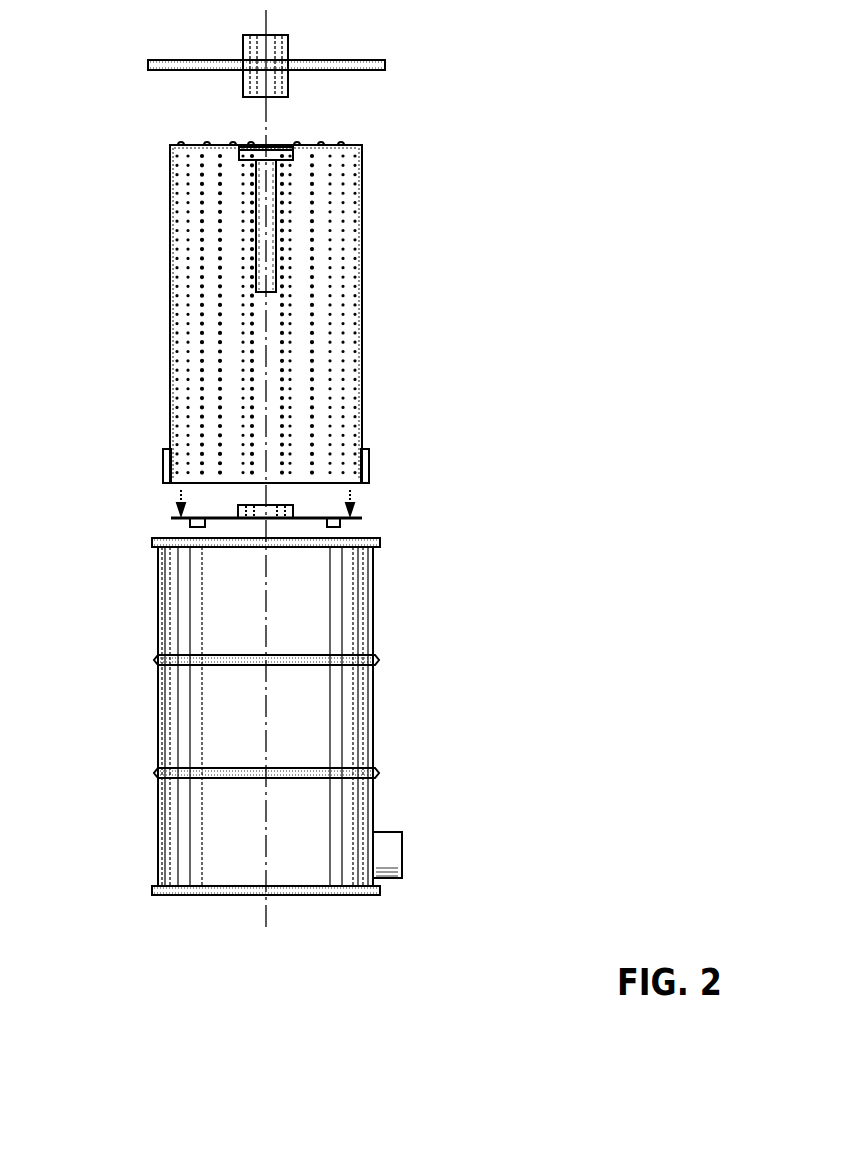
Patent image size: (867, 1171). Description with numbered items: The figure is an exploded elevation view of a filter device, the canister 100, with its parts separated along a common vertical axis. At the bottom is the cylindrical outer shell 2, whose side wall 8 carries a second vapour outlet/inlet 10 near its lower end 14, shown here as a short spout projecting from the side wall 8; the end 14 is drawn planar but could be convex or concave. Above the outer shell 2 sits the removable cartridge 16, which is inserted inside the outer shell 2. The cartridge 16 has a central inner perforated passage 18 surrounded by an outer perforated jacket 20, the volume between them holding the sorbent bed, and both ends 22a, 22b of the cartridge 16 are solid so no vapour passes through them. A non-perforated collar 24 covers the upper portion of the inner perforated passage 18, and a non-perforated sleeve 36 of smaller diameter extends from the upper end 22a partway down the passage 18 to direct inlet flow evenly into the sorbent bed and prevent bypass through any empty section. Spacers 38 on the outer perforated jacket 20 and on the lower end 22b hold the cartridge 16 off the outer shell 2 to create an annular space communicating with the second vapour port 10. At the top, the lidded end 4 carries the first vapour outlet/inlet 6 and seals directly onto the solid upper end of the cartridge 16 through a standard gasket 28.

The outer shell 2 is at (281, 696).
The lidded end 4 is at (385, 63).
The first vapour outlet/inlet 6 is at (243, 50).
The side wall 8 is at (373, 613).
The second vapour outlet/inlet 10 is at (387, 832).
The end of outer shell 14 is at (172, 893).
The removable cartridge 16 is at (260, 307).
The inner perforated passage 18 is at (292, 192).
The outer perforated jacket 20 is at (362, 210).
The end of cartridge 22a is at (343, 146).
The end of cartridge 22b is at (170, 518).
The non-perforated collar 24 is at (240, 152).
The gasket 28 is at (280, 145).
The non-perforated sleeve 36 is at (256, 272).
The spacers 38 is at (190, 520).
The canister 100 is at (528, 10).